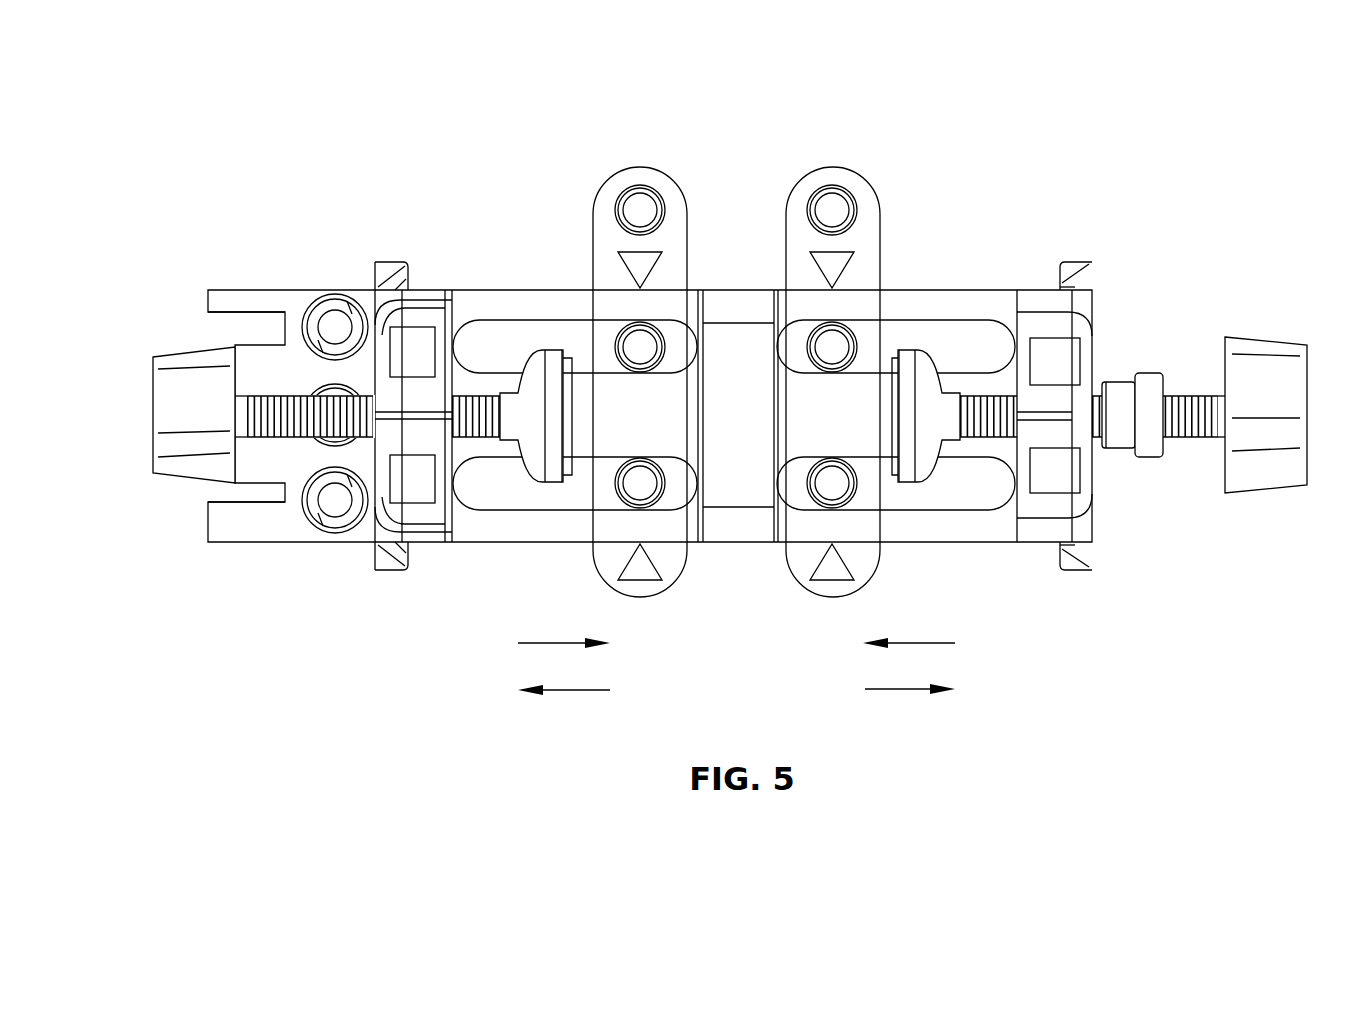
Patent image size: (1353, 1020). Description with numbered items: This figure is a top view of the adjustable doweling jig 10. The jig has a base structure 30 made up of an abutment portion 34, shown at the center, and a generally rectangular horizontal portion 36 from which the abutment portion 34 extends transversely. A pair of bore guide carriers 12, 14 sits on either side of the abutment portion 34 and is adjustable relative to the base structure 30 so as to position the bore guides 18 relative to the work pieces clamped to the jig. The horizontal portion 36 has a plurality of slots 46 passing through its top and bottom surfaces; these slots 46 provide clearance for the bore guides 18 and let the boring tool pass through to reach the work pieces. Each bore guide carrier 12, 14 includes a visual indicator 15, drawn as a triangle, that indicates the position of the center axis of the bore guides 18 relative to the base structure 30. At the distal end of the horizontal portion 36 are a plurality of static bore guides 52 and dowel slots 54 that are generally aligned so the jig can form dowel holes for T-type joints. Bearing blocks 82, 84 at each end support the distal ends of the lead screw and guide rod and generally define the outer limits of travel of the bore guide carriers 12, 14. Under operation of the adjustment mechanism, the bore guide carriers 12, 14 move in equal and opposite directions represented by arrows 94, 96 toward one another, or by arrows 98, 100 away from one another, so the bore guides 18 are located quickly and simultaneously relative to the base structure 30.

The adjustable doweling jig 10 is at (704, 417).
The bore guide carrier 12 is at (662, 167).
The bore guide carrier 14 is at (817, 167).
The visual indicator 15 is at (640, 270).
The bore guide 18 is at (620, 192).
The base structure 30 is at (1003, 290).
The abutment portion 34 is at (734, 345).
The horizontal portion 36 is at (925, 307).
The slot 46 is at (990, 323).
The static bore guide 52 is at (314, 297).
The dowel slot 54 is at (208, 323).
The bearing block 82 is at (393, 572).
The bearing block 84 is at (1093, 527).
The arrow 94 is at (557, 642).
The arrow 96 is at (918, 641).
The arrow 98 is at (557, 691).
The arrow 100 is at (918, 690).